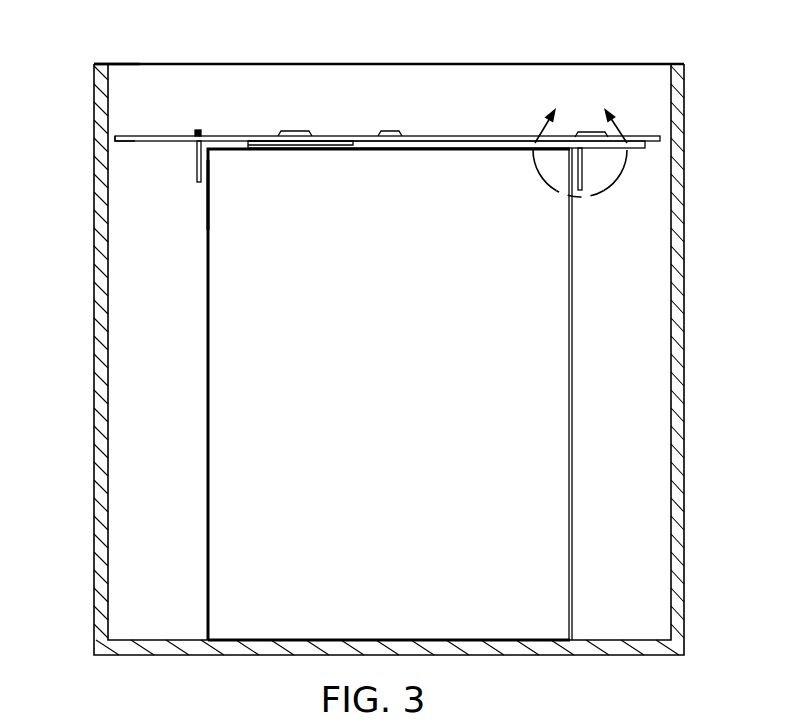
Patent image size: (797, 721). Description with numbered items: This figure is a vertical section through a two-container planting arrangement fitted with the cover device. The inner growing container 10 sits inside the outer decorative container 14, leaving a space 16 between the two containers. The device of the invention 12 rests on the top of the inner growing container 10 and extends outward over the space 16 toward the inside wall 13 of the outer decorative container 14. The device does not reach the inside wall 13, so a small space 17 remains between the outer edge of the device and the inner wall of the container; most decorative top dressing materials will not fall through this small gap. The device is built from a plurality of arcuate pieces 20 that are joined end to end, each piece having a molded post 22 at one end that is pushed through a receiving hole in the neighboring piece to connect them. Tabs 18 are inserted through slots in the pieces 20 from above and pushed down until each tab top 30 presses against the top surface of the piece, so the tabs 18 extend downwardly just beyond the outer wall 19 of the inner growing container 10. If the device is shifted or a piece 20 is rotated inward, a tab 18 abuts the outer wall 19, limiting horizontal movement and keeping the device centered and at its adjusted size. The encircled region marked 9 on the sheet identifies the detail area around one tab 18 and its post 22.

The detail region of FIG. 9 is at (580, 133).
The inner growing container 10 is at (210, 420).
The device of the invention 12 is at (170, 116).
The inside wall of outer decorative container 13 is at (110, 90).
The outer decorative container 14 is at (100, 260).
The space between the containers 16 is at (133, 302).
The small space 17 is at (111, 135).
The tabs 18 is at (195, 162).
The outer wall of the inner container 19 is at (208, 195).
The arcuate pieces 20 is at (235, 135).
The molded post 22 is at (295, 132).
The tab top 30 is at (200, 132).